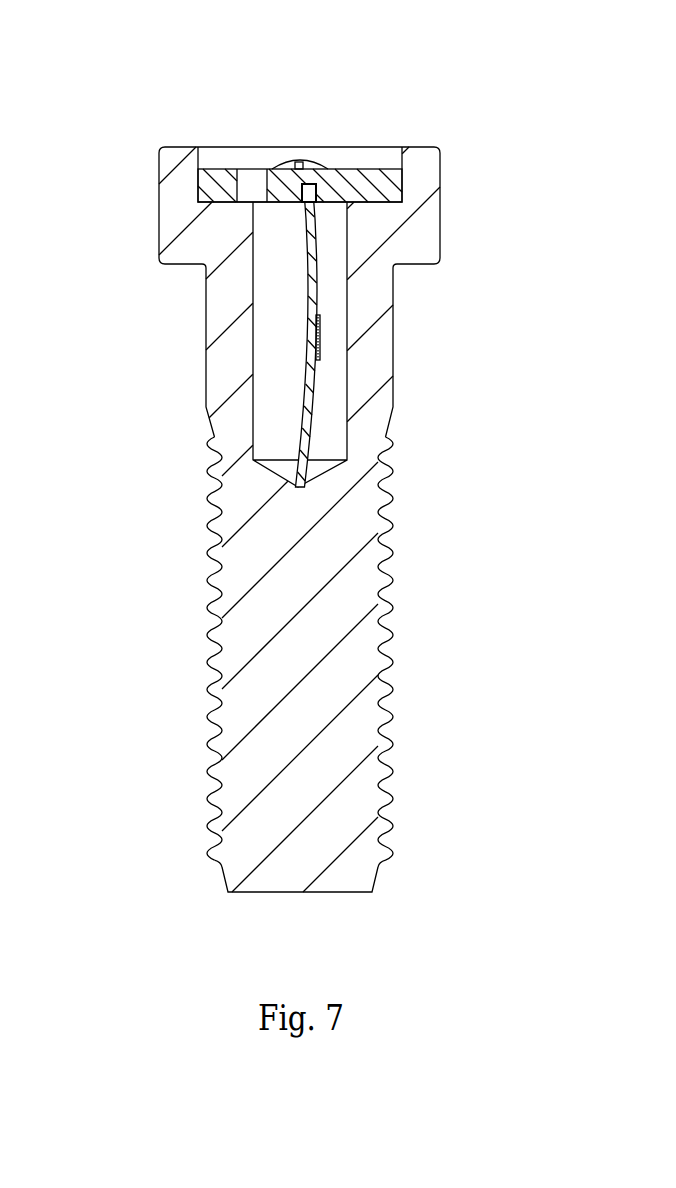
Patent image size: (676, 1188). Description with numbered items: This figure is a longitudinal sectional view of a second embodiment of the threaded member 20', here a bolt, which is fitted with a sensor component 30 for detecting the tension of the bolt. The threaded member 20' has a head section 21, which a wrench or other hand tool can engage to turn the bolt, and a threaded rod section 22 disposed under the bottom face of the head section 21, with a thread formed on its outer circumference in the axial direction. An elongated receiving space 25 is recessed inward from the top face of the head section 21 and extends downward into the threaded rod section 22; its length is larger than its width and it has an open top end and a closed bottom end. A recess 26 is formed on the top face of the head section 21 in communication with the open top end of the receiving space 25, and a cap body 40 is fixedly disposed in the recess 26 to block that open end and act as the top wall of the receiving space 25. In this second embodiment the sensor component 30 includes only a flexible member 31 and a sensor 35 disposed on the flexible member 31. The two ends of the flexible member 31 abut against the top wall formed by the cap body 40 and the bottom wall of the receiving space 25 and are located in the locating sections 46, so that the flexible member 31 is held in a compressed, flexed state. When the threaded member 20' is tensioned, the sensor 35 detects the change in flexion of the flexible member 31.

The threaded member 20' is at (322, 476).
The head section 21 is at (440, 209).
The threaded rod section 22 is at (393, 683).
The receiving space 25 is at (278, 398).
The recess 26 is at (198, 197).
The sensor component 30 is at (285, 335).
The flexible member 31 is at (412, 259).
The sensor 35 is at (318, 340).
The cap body 40 is at (247, 116).
The locating section 46 is at (317, 194).